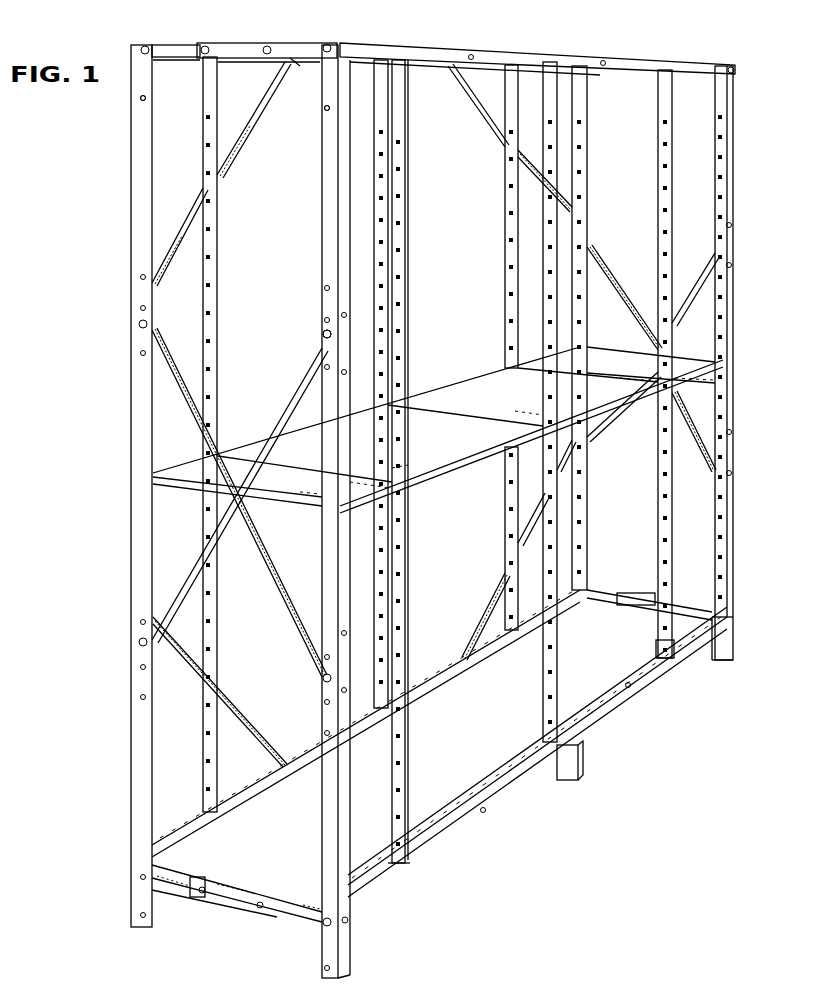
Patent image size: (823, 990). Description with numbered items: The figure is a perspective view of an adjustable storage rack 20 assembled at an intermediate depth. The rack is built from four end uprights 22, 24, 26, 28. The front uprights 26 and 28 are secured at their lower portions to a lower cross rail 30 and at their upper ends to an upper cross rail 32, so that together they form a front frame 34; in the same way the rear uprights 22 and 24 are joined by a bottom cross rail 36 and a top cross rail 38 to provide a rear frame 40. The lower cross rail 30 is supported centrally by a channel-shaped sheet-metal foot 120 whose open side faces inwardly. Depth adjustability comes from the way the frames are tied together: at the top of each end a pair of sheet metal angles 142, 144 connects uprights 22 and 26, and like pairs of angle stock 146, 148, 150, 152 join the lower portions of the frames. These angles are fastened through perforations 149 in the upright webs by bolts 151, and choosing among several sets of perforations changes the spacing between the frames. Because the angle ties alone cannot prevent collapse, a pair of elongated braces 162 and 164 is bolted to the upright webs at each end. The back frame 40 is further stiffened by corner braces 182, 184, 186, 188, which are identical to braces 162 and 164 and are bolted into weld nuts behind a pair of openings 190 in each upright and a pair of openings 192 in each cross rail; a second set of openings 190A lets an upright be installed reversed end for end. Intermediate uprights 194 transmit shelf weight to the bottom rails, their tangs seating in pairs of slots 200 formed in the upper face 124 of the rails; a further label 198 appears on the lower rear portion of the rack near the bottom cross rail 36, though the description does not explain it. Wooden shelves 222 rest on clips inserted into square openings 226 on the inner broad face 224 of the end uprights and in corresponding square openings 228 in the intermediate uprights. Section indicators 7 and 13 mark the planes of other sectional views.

The section line 7- 7 is at (380, 30).
The section line 13- 13 is at (578, 730).
The adjustable rack 20 is at (103, 462).
The end upright 22 is at (139, 761).
The end upright 24 is at (578, 557).
The end upright 26 is at (329, 835).
The end upright 28 is at (719, 576).
The lower cross rail 30 is at (456, 832).
The upper cross rail 32 is at (506, 56).
The front frame 34 is at (326, 262).
The bottom cross rail 36 is at (431, 684).
The top cross rail 38 is at (300, 66).
The rear frame 40 is at (452, 75).
The foot 120 is at (580, 764).
The upper face 124 is at (382, 880).
The sheet metal angle 142 is at (283, 50).
The sheet metal angle 144 is at (178, 43).
The metal angle member 146 is at (283, 895).
The metal angle member 148 is at (184, 870).
The perforation 149 is at (140, 100).
The metal angle member 150 is at (606, 588).
The bolt 151 is at (143, 46).
The metal angle member 152 is at (684, 603).
The brace 162 is at (300, 386).
The brace 164 is at (190, 420).
The corner brace 182 is at (258, 97).
The corner brace 184 is at (510, 146).
The corner brace 186 is at (234, 694).
The corner brace 188 is at (503, 572).
The opening 190 is at (342, 314).
The opening 190A is at (325, 334).
The opening 192 is at (471, 55).
The intermediate upright 194 is at (204, 96).
The rear bottom beam 198 is at (264, 782).
The slot 200 is at (512, 777).
The shelf 222 is at (473, 471).
The inner broad face 224 is at (724, 108).
The square opening 226 is at (717, 498).
The square opening 228 is at (504, 232).